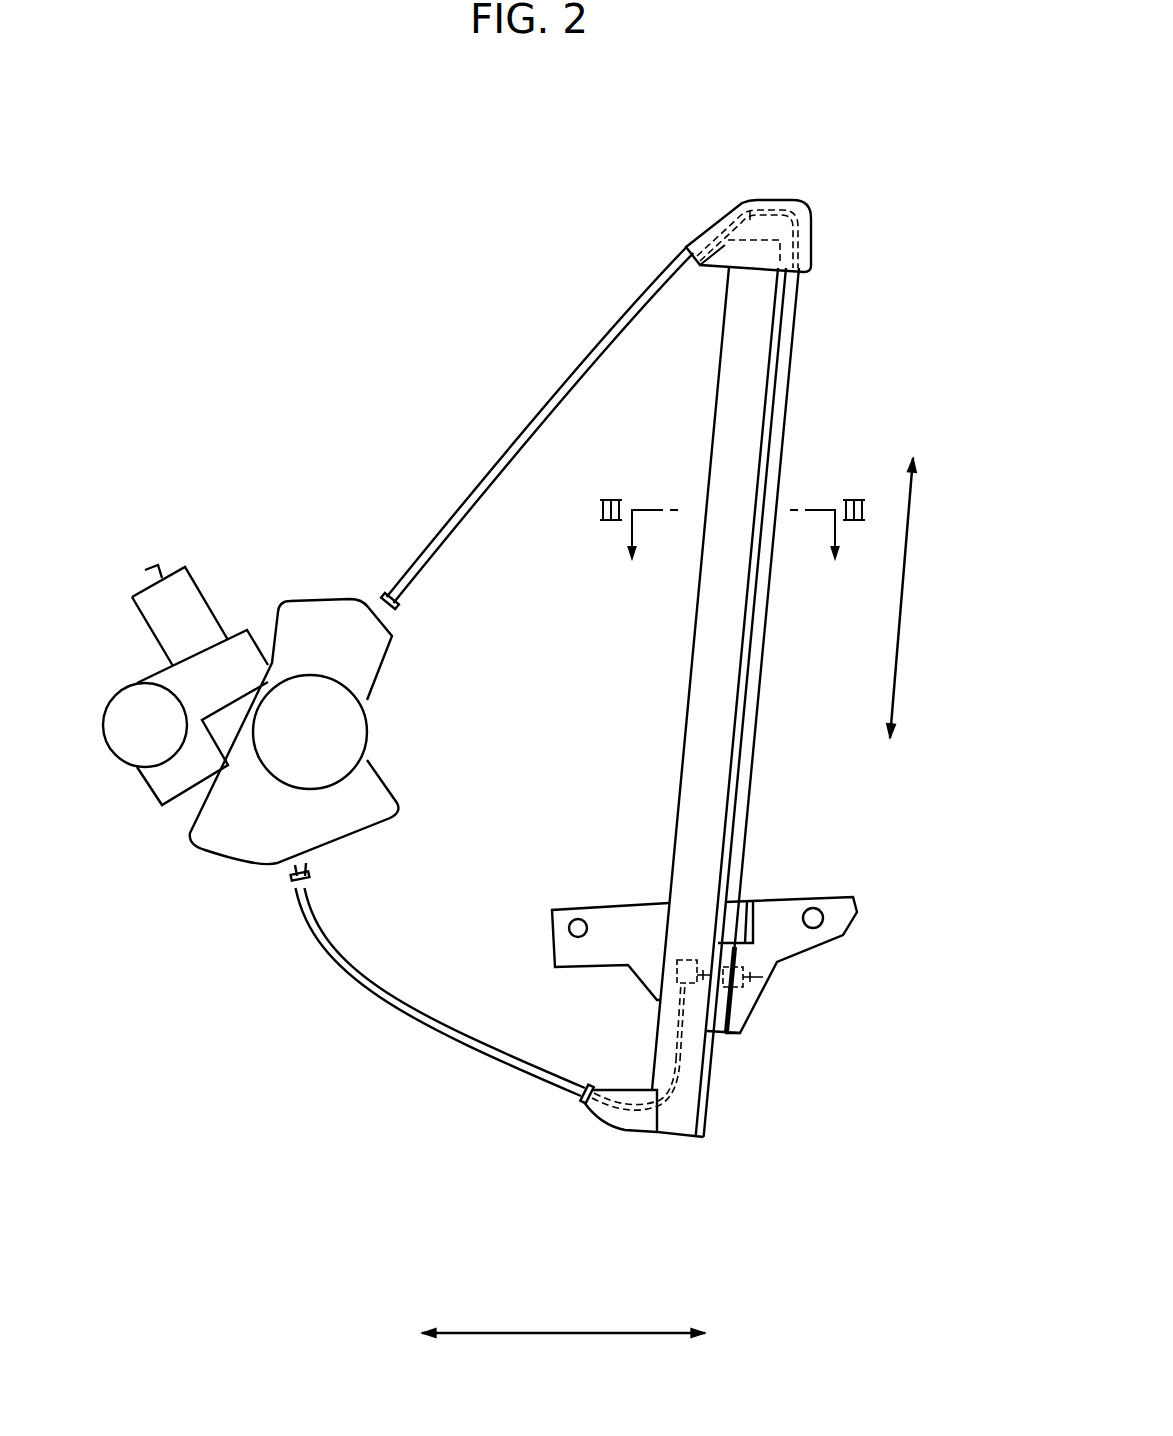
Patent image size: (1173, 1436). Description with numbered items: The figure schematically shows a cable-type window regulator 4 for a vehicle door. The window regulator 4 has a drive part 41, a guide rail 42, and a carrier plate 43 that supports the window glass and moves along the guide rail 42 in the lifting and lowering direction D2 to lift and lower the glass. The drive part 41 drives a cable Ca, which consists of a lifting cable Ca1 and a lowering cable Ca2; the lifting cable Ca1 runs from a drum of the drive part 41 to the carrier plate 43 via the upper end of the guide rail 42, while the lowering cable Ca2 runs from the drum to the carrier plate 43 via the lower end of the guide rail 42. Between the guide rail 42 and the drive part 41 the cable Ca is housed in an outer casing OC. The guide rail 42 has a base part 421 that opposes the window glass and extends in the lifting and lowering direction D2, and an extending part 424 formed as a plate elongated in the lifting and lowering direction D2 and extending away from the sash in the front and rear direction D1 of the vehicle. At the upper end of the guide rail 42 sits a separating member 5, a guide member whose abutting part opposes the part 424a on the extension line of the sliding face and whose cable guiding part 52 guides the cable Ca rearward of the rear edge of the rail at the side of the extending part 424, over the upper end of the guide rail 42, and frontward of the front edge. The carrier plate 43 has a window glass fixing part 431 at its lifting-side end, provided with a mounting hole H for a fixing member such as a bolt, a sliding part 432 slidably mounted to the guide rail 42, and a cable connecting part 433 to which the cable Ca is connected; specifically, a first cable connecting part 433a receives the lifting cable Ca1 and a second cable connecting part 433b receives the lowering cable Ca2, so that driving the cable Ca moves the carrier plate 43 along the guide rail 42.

The window regulator 4 is at (266, 196).
The drive part 41 is at (228, 602).
The outer casing OC is at (563, 390).
The guide rail 42 is at (717, 702).
The base part 421 is at (723, 625).
The extending part 424 is at (737, 723).
The part on the extension line of the sliding face 424a is at (810, 262).
The separating member 5 is at (799, 203).
The cable guiding part 52 is at (750, 200).
The window glass fixing part 431 is at (575, 920).
The sliding part 432 is at (722, 890).
The mounting hole H is at (748, 790).
The carrier plate 43 is at (770, 980).
The cable connecting part 433 is at (770, 1114).
The first cable connecting part 433a is at (763, 978).
The second cable connecting part 433b is at (728, 990).
The cable Ca is at (593, 1095).
The lifting cable Ca1 is at (577, 937).
The lowering cable Ca2 is at (635, 1144).
The front and rear direction D1 is at (636, 1335).
The lifting and lowering direction D2 is at (903, 597).